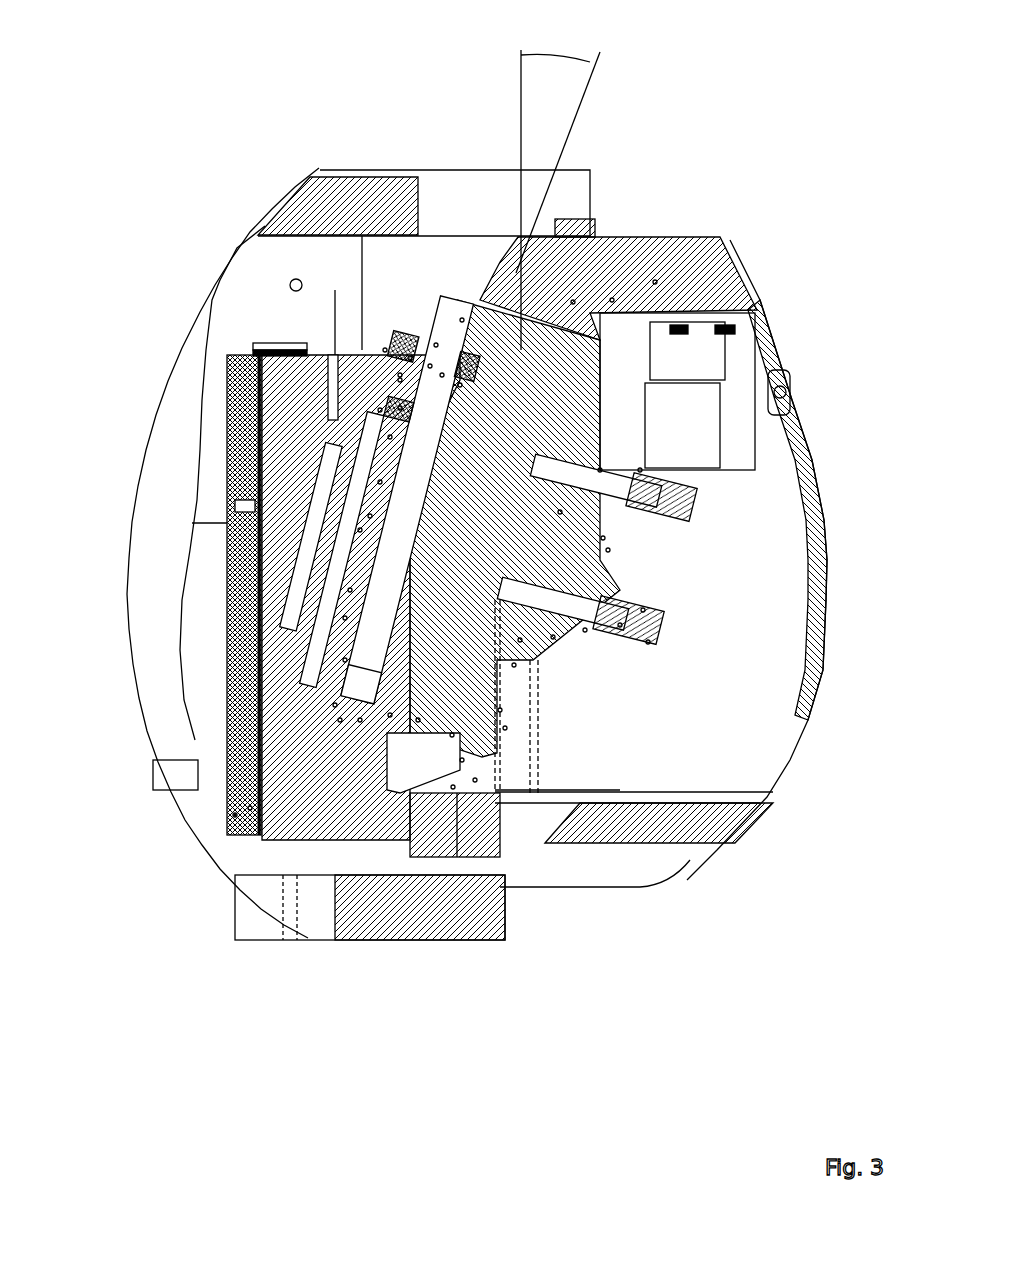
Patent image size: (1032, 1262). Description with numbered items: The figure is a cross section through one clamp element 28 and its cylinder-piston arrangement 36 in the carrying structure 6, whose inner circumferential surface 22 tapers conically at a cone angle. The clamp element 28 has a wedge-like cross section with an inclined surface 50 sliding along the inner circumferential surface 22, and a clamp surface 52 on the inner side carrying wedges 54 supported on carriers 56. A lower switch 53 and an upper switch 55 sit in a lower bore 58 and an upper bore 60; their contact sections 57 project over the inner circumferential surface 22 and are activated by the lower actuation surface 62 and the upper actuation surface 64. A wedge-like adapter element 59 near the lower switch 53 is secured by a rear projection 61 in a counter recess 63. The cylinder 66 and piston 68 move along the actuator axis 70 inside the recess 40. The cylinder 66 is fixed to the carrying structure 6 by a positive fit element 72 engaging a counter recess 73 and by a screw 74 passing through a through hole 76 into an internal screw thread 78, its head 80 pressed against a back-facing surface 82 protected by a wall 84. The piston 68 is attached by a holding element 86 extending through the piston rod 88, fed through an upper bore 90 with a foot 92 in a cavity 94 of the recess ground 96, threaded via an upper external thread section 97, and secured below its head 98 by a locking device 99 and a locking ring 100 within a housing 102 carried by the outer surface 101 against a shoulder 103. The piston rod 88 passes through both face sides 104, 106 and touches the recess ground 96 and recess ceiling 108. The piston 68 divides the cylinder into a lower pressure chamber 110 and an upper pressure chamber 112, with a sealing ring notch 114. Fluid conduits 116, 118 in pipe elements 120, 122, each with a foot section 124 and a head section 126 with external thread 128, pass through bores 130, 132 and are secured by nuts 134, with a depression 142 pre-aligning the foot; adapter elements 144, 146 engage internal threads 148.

The carrying structure 6 is at (723, 237).
The inner circumferential surface 22 is at (500, 320).
The clamp element 28 is at (400, 357).
The cylinder-piston arrangement 36 is at (330, 557).
The recess 40 is at (330, 577).
The inclined surface 50 is at (667, 280).
The clamp surface 52 is at (235, 815).
The lower switch 53 is at (360, 720).
The wedges 54 is at (197, 762).
The upper switch 55 is at (612, 300).
The carriers 56 is at (250, 808).
The contact section 57 is at (501, 300).
The lower bore 58 is at (475, 780).
The adapter element 59 is at (390, 715).
The upper bore 60 is at (655, 282).
The rear projection 61 is at (452, 735).
The lower actuation surface 62 is at (340, 720).
The counter recess 63 is at (462, 760).
The upper actuation surface 64 is at (573, 302).
The cylinder 66 is at (400, 408).
The piston 68 is at (380, 482).
The actuator axis 70 is at (250, 933).
The positive fit element 72 is at (400, 380).
The counter recess 73 is at (600, 490).
The screw 74 is at (610, 568).
The through hole 76 is at (603, 538).
The internal screw thread 78 is at (560, 512).
The head 80 is at (608, 550).
The back-facing surface 82 is at (648, 642).
The wall 84 is at (643, 610).
The holding element 86 is at (370, 424).
The piston rod 88 is at (350, 590).
The upper bore 90 is at (400, 375).
The foot 92 is at (345, 660).
The cavity 94 is at (335, 705).
The recess ground 96 is at (345, 618).
The upper external thread section 97 is at (460, 385).
The head 98 is at (436, 345).
The locking device 99 is at (442, 375).
The locking ring 100 is at (430, 366).
The outer surface 101 is at (385, 350).
The housing 102 is at (410, 358).
The shoulder 103 is at (462, 320).
The face side 104 is at (360, 530).
The face side 106 is at (380, 410).
The recess ceiling 108 is at (598, 345).
The lower pressure chamber 110 is at (240, 507).
The upper pressure chamber 112 is at (390, 437).
The outer circumferential notch 114 is at (370, 516).
The fluid conduit 116 is at (505, 728).
The fluid conduit 118 is at (640, 470).
The pipe element 120 is at (500, 710).
The pipe element 122 is at (600, 470).
The foot section 124 is at (418, 720).
The head section 126 is at (553, 637).
The external thread 128 is at (620, 625).
The through bore 130 is at (514, 665).
The through bore 132 is at (612, 440).
The nuts 134 is at (585, 630).
The depression 142 is at (453, 787).
The adapter element 144 is at (662, 618).
The adapter element 146 is at (745, 455).
The internal threads 148 is at (520, 640).